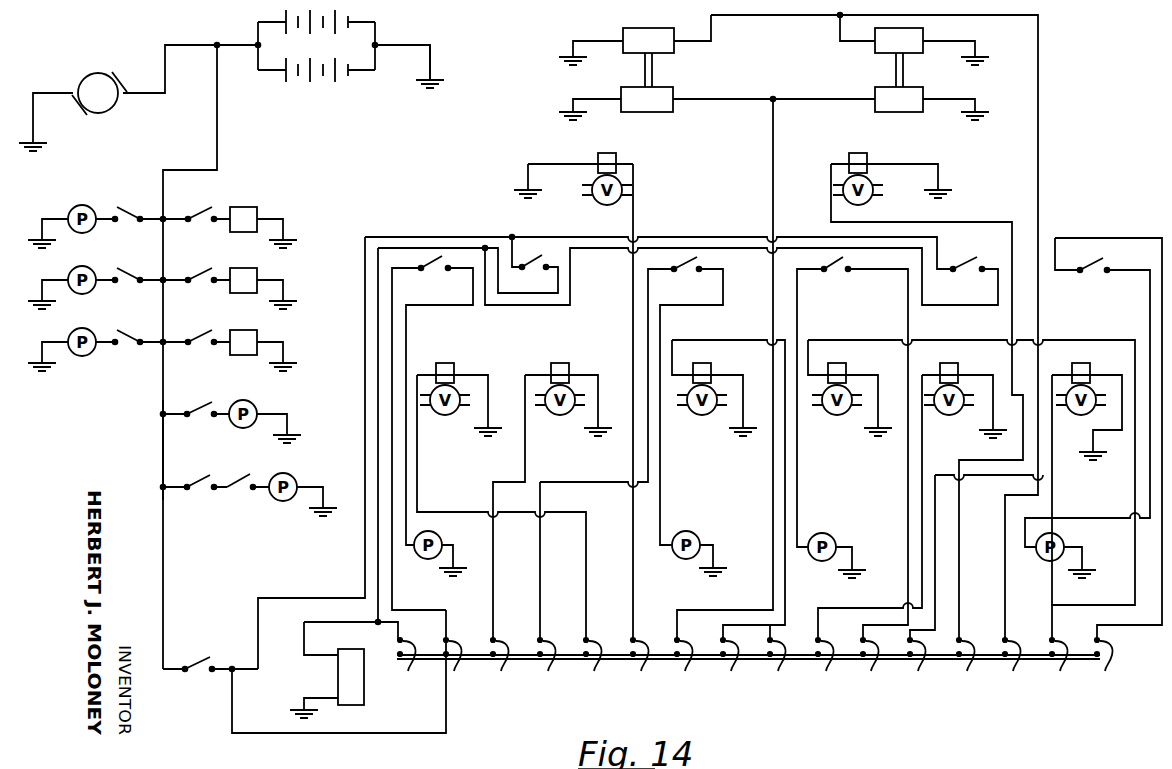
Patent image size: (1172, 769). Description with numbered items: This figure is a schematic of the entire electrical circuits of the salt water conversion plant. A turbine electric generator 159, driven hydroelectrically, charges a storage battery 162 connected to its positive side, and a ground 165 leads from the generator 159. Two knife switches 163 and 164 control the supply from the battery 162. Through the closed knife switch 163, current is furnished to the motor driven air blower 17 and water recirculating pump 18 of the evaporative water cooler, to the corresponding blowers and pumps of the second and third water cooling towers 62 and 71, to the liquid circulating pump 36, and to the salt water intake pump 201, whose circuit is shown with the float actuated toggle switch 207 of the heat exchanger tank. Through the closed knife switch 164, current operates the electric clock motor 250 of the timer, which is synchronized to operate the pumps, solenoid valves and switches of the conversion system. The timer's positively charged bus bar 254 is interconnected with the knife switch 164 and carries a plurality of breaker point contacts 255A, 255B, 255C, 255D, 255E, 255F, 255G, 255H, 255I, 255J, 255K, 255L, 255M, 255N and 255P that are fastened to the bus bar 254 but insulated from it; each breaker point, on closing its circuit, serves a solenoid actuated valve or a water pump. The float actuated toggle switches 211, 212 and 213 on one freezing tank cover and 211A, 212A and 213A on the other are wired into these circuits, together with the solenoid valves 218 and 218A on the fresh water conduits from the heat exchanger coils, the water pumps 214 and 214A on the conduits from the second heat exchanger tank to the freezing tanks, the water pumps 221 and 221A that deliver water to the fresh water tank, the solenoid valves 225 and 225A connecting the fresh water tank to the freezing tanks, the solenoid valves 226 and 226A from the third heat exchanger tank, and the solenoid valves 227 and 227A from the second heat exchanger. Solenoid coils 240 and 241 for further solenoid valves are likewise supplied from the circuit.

The turbine electric generator 159 is at (116, 106).
The storage battery 162 is at (320, 86).
The ground 165 is at (423, 93).
The water recirculating pump 18 is at (72, 208).
The motor driven air blower 17 is at (232, 209).
The second water cooling tower 62 is at (232, 270).
The third water cooling tower 71 is at (234, 332).
The liquid circulating pump 36 is at (255, 402).
The knife switch 163 is at (190, 478).
The salt water intake pump 201 is at (298, 470).
The float actuated toggle switch 207 is at (258, 483).
The knife switch 164 is at (196, 660).
The electric clock motor 250 is at (364, 698).
The solenoid coils 240 is at (650, 76).
The solenoid coils 241 is at (896, 74).
The float actuated toggle switch 211 is at (440, 254).
The float actuated toggle switch 212 is at (539, 254).
The solenoid valve 218 is at (594, 200).
The float actuated toggle switch 213 is at (684, 256).
The float actuated toggle switch 213A is at (842, 244).
The solenoid valve 218A is at (870, 200).
The float actuated toggle switch 212A is at (956, 256).
The float actuated toggle switch 211A is at (1098, 248).
The solenoid valve 227 is at (447, 418).
The solenoid valve 226 is at (560, 418).
The solenoid valve 225 is at (690, 418).
The solenoid valve 225A is at (826, 418).
The solenoid valve 226A is at (940, 418).
The solenoid valve 227A is at (1075, 418).
The water pump 214 is at (422, 560).
The water pump 221 is at (680, 560).
The water pump 221A is at (816, 562).
The water pump 214A is at (1044, 562).
The breaker point contact 255A is at (413, 663).
The breaker point contact 255B is at (472, 663).
The breaker point contact 255C is at (516, 673).
The breaker point contact 255D is at (551, 663).
The breaker point contact 255F is at (595, 673).
The breaker point contact 255G is at (651, 663).
The breaker point contact 255H is at (694, 673).
The breaker point contact 255I is at (752, 663).
The breaker point contact 255J is at (835, 663).
The breaker point contact 255K is at (882, 673).
The breaker point contact 255L is at (933, 663).
The breaker point contact 255M is at (976, 673).
The breaker point contact 255N is at (1023, 663).
The breaker point contact 255P is at (1064, 673).
The breaker point contact 255E is at (1125, 663).
The bus bar 254 is at (796, 662).